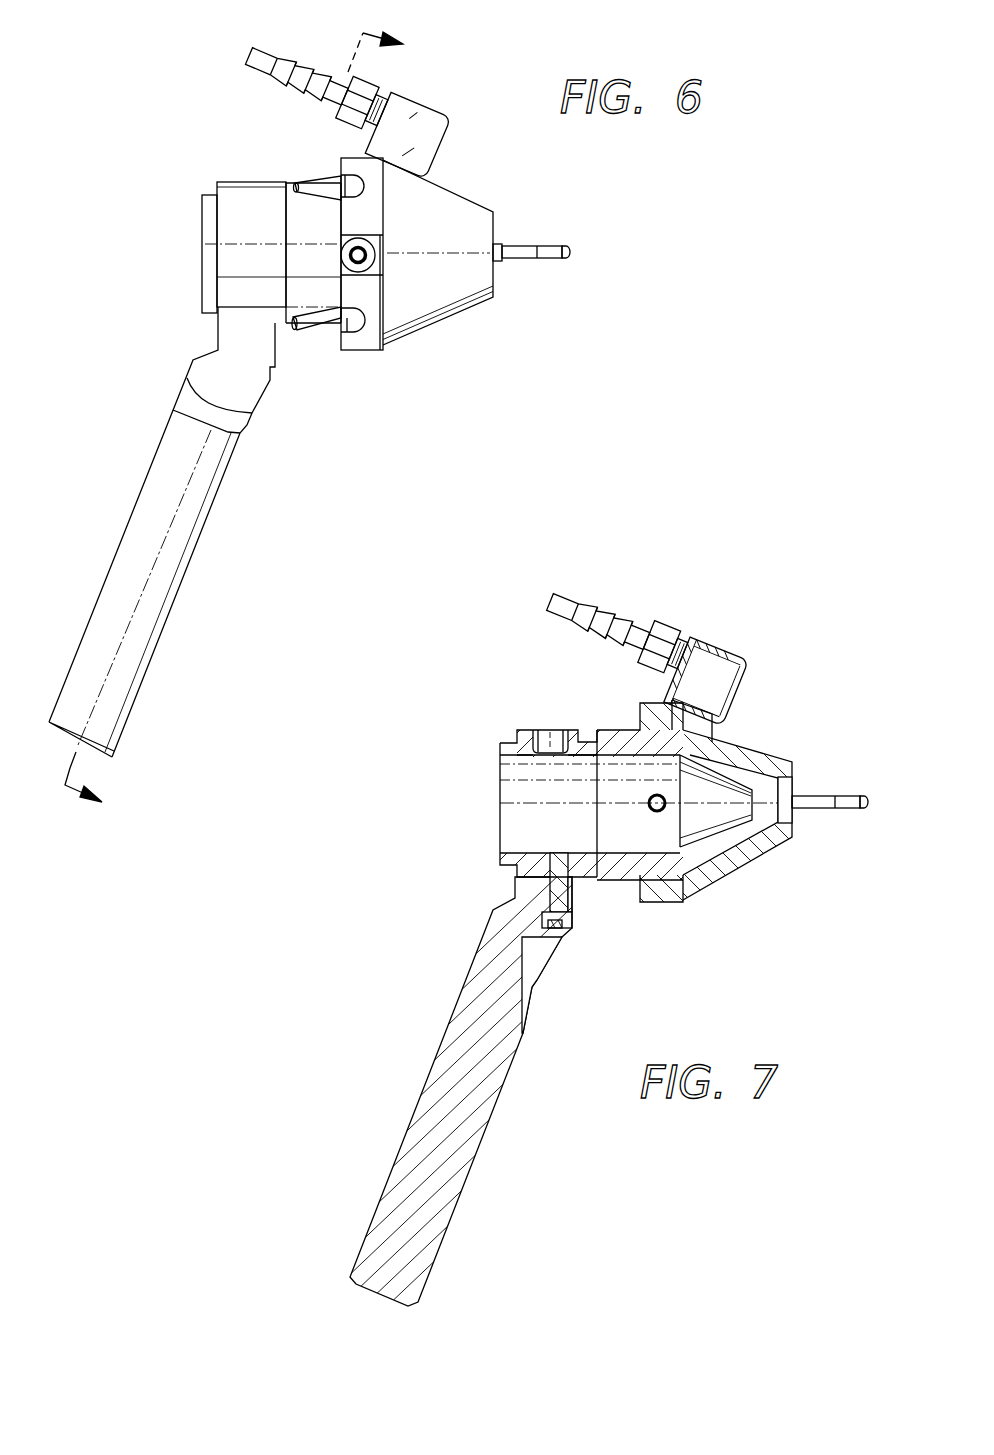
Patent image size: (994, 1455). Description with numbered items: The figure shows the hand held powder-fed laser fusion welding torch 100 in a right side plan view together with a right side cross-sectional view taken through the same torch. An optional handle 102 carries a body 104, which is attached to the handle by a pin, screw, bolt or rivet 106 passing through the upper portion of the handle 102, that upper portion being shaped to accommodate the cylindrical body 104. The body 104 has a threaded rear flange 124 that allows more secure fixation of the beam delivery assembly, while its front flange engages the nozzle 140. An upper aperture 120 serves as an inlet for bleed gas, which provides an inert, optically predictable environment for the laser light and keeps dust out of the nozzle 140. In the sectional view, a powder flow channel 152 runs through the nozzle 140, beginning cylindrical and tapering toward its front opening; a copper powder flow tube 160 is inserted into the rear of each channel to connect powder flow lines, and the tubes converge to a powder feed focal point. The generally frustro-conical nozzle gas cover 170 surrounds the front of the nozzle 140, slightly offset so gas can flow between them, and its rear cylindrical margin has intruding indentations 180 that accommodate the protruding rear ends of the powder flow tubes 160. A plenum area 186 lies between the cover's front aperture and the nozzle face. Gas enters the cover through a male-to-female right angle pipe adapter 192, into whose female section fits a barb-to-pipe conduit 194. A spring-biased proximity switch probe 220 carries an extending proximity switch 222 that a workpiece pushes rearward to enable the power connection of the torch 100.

In FIG. 6, the hand held powder-fed laser fusion welding torch 100 is at (621, 193).
In FIG. 6, the handle 102 is at (177, 566).
In FIG. 7, the handle 102 is at (428, 1098).
In FIG. 6, the body 104 is at (228, 187).
In FIG. 7, the body 104 is at (505, 740).
In FIG. 7, the fastener 106 is at (572, 918).
In FIG. 7, the upper aperture 120 is at (550, 728).
In FIG. 6, the rear flange 124 is at (202, 213).
In FIG. 6, the nozzle 140 is at (328, 177).
In FIG. 7, the nozzle 140 is at (610, 727).
In FIG. 7, the powder flow channel 152 is at (730, 857).
In FIG. 6, the powder flow tube 160 is at (302, 327).
In FIG. 6, the nozzle gas cover 170 is at (435, 323).
In FIG. 7, the nozzle gas cover 170 is at (752, 743).
In FIG. 6, the indentations 180 is at (353, 330).
In FIG. 7, the plenum area 186 is at (763, 827).
In FIG. 6, the male-to-female right angle pipe adapter 192 is at (420, 96).
In FIG. 7, the male-to-female right angle pipe adapter 192 is at (717, 638).
In FIG. 6, the barb-to-pipe conduit 194 is at (278, 53).
In FIG. 7, the barb-to-pipe conduit 194 is at (602, 612).
In FIG. 6, the proximity switch probe 220 is at (505, 228).
In FIG. 7, the proximity switch probe 220 is at (832, 777).
In FIG. 6, the proximity switch 222 is at (548, 260).
In FIG. 7, the proximity switch 222 is at (848, 812).